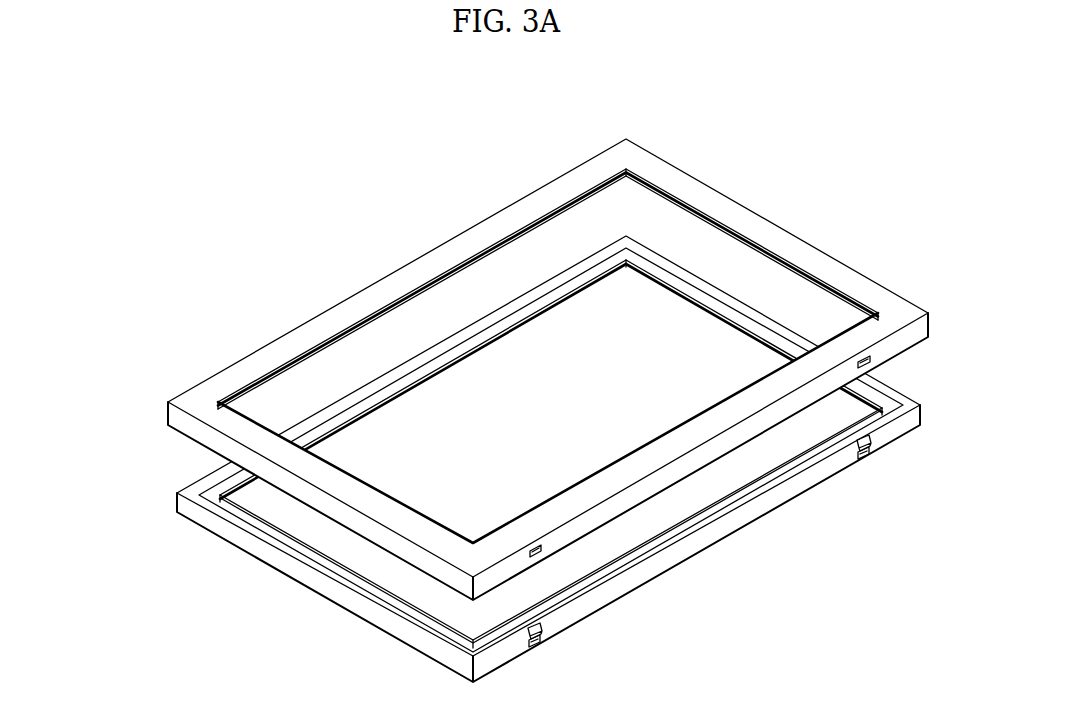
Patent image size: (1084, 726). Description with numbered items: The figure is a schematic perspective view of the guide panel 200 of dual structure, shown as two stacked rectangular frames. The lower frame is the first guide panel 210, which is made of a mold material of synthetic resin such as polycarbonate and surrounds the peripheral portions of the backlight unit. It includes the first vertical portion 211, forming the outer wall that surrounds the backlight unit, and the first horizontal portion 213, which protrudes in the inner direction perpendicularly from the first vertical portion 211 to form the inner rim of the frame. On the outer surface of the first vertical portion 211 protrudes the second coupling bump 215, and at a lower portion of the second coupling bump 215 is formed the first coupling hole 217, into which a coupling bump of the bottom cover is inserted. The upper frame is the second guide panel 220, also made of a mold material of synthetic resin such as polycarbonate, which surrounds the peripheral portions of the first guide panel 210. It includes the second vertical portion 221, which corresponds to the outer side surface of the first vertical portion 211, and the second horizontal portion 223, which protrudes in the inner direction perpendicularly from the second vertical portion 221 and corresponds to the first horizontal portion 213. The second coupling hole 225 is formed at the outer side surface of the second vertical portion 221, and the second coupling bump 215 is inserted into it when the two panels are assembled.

The guide panel 200 is at (505, 371).
The first guide panel 210 is at (505, 459).
The first vertical portion 211 is at (188, 515).
The first horizontal portion 213 is at (208, 483).
The second coupling bump 215 is at (542, 627).
The first coupling hole 217 is at (543, 642).
The second guide panel 220 is at (505, 369).
The second vertical portion 221 is at (188, 425).
The second horizontal portion 223 is at (210, 398).
The second coupling hole 225 is at (548, 543).